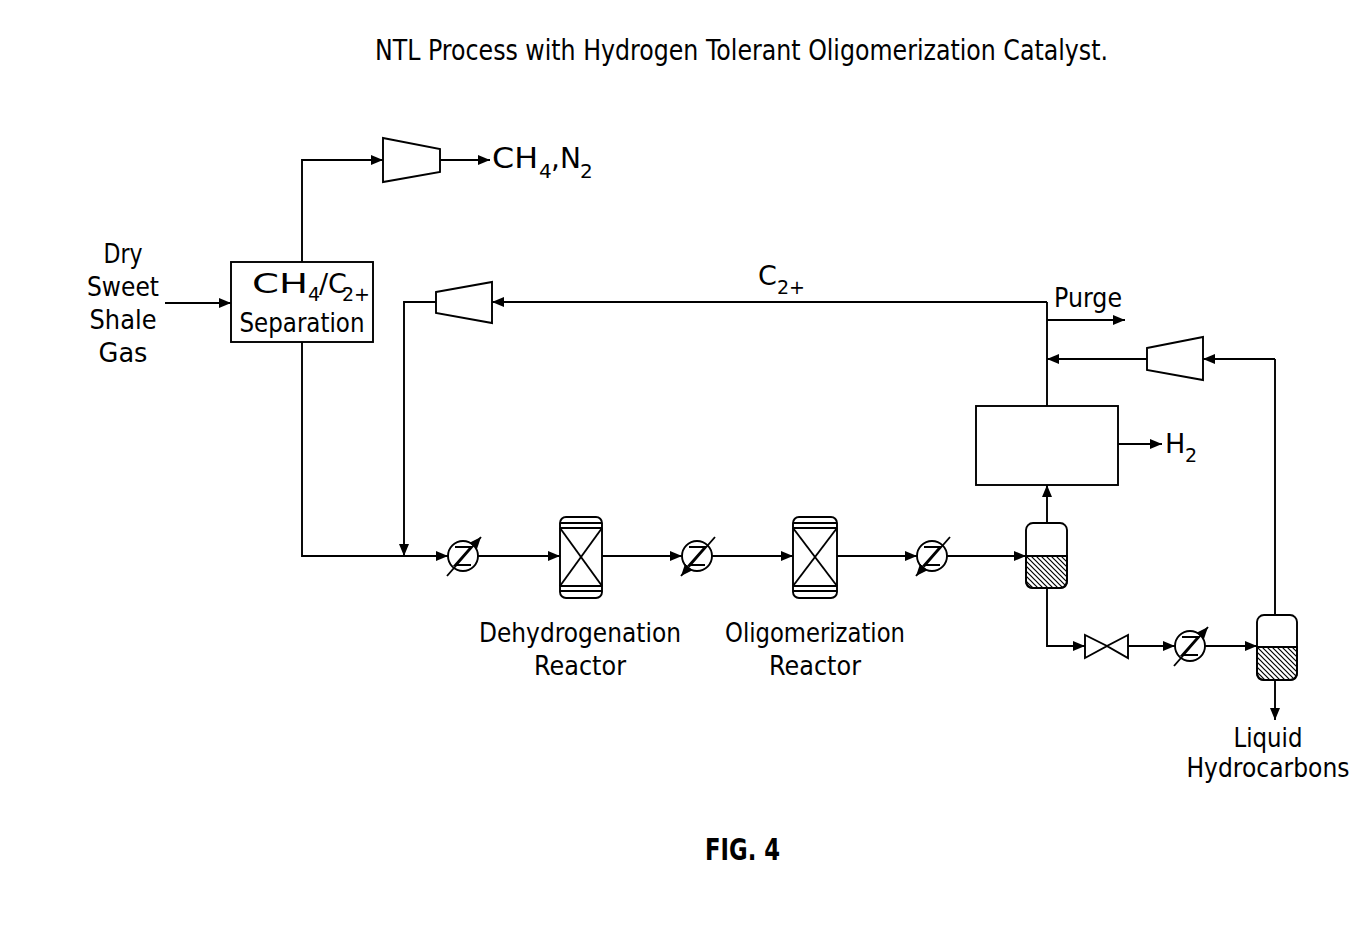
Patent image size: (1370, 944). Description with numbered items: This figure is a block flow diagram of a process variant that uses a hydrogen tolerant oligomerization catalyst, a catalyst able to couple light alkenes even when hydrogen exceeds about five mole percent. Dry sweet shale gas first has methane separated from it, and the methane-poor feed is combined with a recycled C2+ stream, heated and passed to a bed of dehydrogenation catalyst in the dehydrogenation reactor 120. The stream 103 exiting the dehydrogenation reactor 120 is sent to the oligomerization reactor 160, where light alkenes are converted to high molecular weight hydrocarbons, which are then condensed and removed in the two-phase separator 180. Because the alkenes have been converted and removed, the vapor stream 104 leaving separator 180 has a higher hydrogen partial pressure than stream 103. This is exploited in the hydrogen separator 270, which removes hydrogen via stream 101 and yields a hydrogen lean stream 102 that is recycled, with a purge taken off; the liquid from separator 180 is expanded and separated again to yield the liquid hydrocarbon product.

The hydrogen stream 101 is at (1142, 442).
The hydrogen lean stream 102 is at (1047, 382).
The dehydrogenation reactor effluent stream 103 is at (750, 556).
The vapor stream 104 is at (1045, 507).
The dehydrogenation reactor 120 is at (580, 517).
The oligomerization reactor 160 is at (813, 517).
The two-phase separator 180 is at (1068, 570).
The hydrogen separator 270 is at (1058, 406).